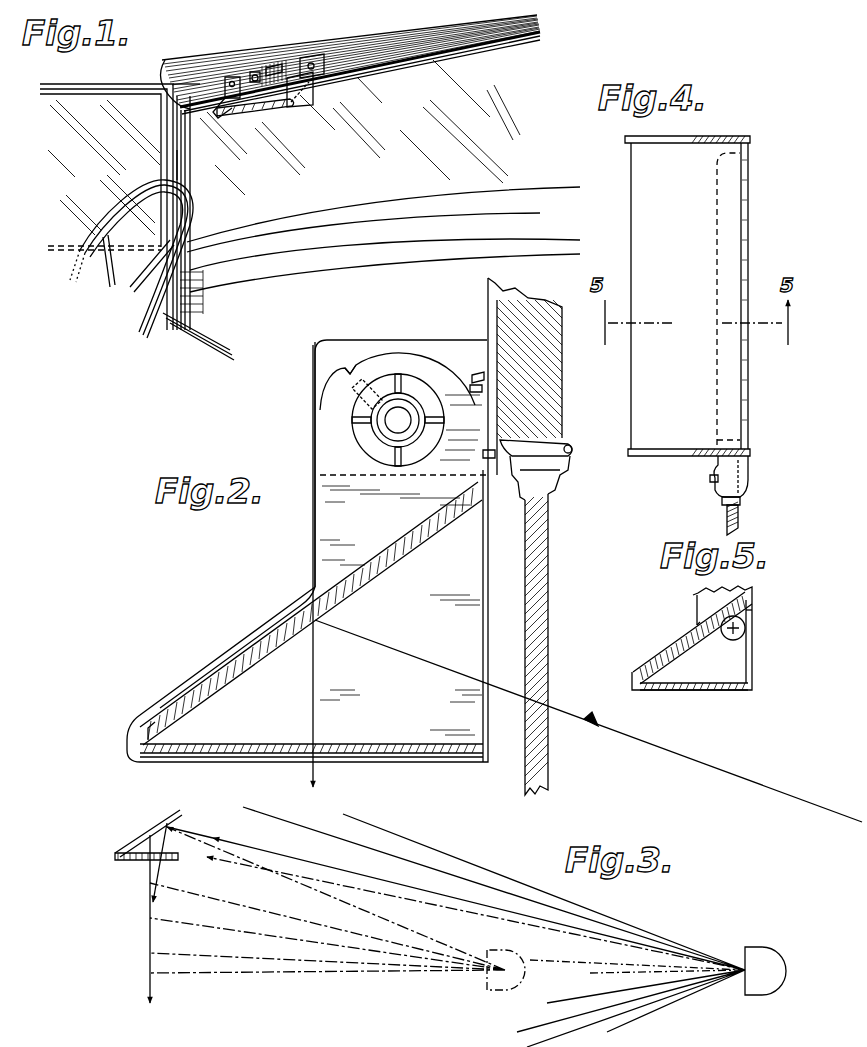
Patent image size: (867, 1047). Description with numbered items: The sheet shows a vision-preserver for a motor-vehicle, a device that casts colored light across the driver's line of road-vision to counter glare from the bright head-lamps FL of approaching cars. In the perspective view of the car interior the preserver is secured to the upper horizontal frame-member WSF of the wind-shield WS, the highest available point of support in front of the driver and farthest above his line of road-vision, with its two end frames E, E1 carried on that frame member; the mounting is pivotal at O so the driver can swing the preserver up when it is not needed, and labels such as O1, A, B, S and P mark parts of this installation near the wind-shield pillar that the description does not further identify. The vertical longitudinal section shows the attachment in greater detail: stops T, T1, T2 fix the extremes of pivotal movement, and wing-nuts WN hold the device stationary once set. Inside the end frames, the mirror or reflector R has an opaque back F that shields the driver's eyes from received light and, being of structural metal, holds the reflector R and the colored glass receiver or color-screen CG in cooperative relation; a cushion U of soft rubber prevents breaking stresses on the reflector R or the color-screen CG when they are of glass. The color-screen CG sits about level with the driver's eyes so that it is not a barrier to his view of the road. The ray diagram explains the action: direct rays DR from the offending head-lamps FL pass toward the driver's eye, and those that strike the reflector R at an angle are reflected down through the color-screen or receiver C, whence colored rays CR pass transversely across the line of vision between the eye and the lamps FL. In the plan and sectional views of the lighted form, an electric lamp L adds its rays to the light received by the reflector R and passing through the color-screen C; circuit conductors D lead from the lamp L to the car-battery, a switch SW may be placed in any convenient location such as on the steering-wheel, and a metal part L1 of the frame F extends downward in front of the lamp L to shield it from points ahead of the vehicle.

In FIG. 1, the pivot O is at (230, 82).
In FIG. 2, the pivot O is at (417, 420).
In FIG. 1, the lamp bulb O1 is at (324, 62).
In FIG. 1, the lamp housing A is at (231, 86).
In FIG. 2, the lamp housing A is at (320, 390).
In FIG. 1, the bracket B is at (254, 75).
In FIG. 1, the screw S is at (275, 68).
In FIG. 2, the screw S is at (480, 374).
In FIG. 1, the upper horizontal frame-member of the wind-shield WSF is at (513, 30).
In FIG. 2, the upper horizontal frame-member of the wind-shield WSF is at (548, 404).
In FIG. 1, the wind-shield WS is at (360, 127).
In FIG. 2, the wind-shield WS is at (549, 546).
In FIG. 1, the end frame E is at (218, 111).
In FIG. 2, the end frame E is at (262, 624).
In FIG. 5, the end frame E is at (645, 668).
In FIG. 1, the end frame E1 is at (198, 98).
In FIG. 2, the end frame E1 is at (315, 538).
In FIG. 5, the end frame E1 is at (697, 602).
In FIG. 1, the color-screen or receiver C is at (258, 108).
In FIG. 5, the color-screen or receiver C is at (716, 686).
In FIG. 3, the color-screen or receiver C is at (135, 861).
In FIG. 1, the windshield pillar P is at (190, 166).
In FIG. 2, the stop T is at (348, 366).
In FIG. 2, the wing-nut WN is at (360, 382).
In FIG. 2, the stop T1 is at (479, 448).
In FIG. 2, the stop T2 is at (476, 386).
In FIG. 2, the opaque back F is at (337, 577).
In FIG. 5, the opaque back F is at (697, 624).
In FIG. 2, the mirror or reflector R is at (290, 636).
In FIG. 4, the mirror or reflector R is at (635, 232).
In FIG. 5, the mirror or reflector R is at (688, 640).
In FIG. 3, the mirror or reflector R is at (180, 818).
In FIG. 2, the cushion U is at (153, 741).
In FIG. 2, the colored glass receiver or color-screen CG is at (352, 745).
In FIG. 2, the direct rays DR is at (750, 778).
In FIG. 3, the direct rays DR is at (450, 968).
In FIG. 3, the colored rays CR is at (160, 873).
In FIG. 3, the head-lamps FL is at (765, 938).
In FIG. 4, the electric lamp L is at (719, 259).
In FIG. 5, the electric lamp L is at (746, 629).
In FIG. 5, the metal part of the frame L1 is at (752, 615).
In FIG. 4, the switch SW is at (714, 478).
In FIG. 4, the electric circuit conductors D is at (725, 512).